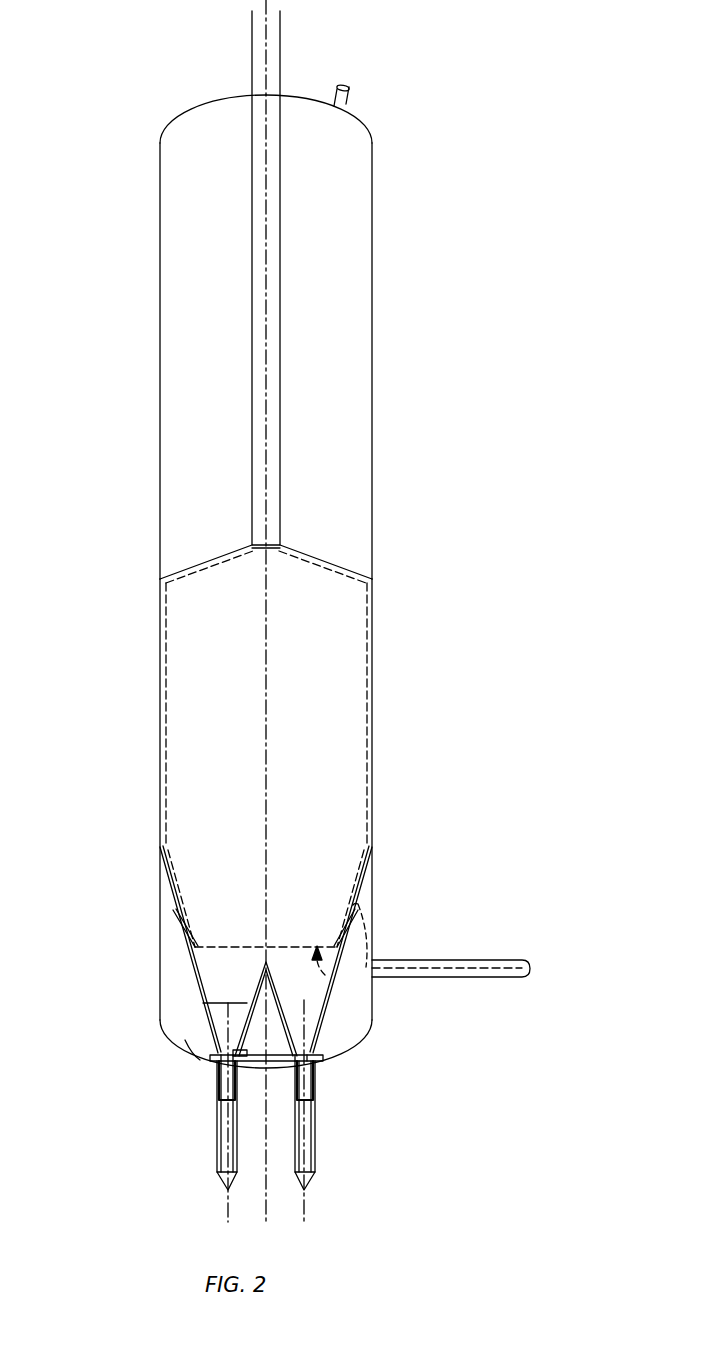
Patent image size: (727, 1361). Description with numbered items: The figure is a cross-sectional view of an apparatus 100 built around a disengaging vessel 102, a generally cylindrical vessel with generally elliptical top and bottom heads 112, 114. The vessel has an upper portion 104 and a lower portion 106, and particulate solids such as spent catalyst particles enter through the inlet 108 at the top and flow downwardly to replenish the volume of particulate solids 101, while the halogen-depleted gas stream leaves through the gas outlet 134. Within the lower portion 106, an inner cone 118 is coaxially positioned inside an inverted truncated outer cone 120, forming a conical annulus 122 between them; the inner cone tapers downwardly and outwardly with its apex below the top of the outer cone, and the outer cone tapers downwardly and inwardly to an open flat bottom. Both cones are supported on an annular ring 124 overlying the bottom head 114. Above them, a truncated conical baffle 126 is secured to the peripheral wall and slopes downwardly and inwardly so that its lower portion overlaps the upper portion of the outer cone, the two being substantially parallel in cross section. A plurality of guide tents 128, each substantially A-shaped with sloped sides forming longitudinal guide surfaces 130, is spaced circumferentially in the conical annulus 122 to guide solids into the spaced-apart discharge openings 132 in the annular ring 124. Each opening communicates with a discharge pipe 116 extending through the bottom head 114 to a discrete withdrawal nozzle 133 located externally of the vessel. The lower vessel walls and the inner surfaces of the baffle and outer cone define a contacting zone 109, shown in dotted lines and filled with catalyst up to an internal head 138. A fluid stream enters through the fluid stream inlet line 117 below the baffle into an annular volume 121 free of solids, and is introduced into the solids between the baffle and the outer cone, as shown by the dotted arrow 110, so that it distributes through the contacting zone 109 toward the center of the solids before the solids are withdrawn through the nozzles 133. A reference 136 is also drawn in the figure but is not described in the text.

The apparatus 100 is at (503, 210).
The volume of particulate solids 101 is at (320, 777).
The disengaging vessel 102 is at (372, 392).
The upper portion 104 is at (358, 128).
The lower portion 106 is at (373, 775).
The inlet 108 is at (280, 28).
The contacting zone 109 is at (163, 648).
The dotted arrow 110 is at (367, 915).
The top head 112 is at (190, 110).
The bottom head 114 is at (202, 1065).
The discharge pipes 116 is at (215, 1088).
The fluid stream inlet line 117 is at (530, 967).
The inner cone 118 is at (272, 977).
The inverted truncated outer cone 120 is at (175, 922).
The annular volume 121 is at (190, 1043).
The conical annulus 122 is at (335, 983).
The annular ring 124 is at (330, 1060).
The truncated conical baffle 126 is at (170, 878).
The guide tents 128 is at (250, 1007).
The longitudinal guide surfaces 130 is at (228, 1002).
The spaced-apart discharge openings 132 is at (220, 1052).
The discrete withdrawal nozzles 133 is at (217, 1173).
The gas outlet 134 is at (343, 82).
The bed zone 136 is at (253, 836).
The internal head 138 is at (373, 579).